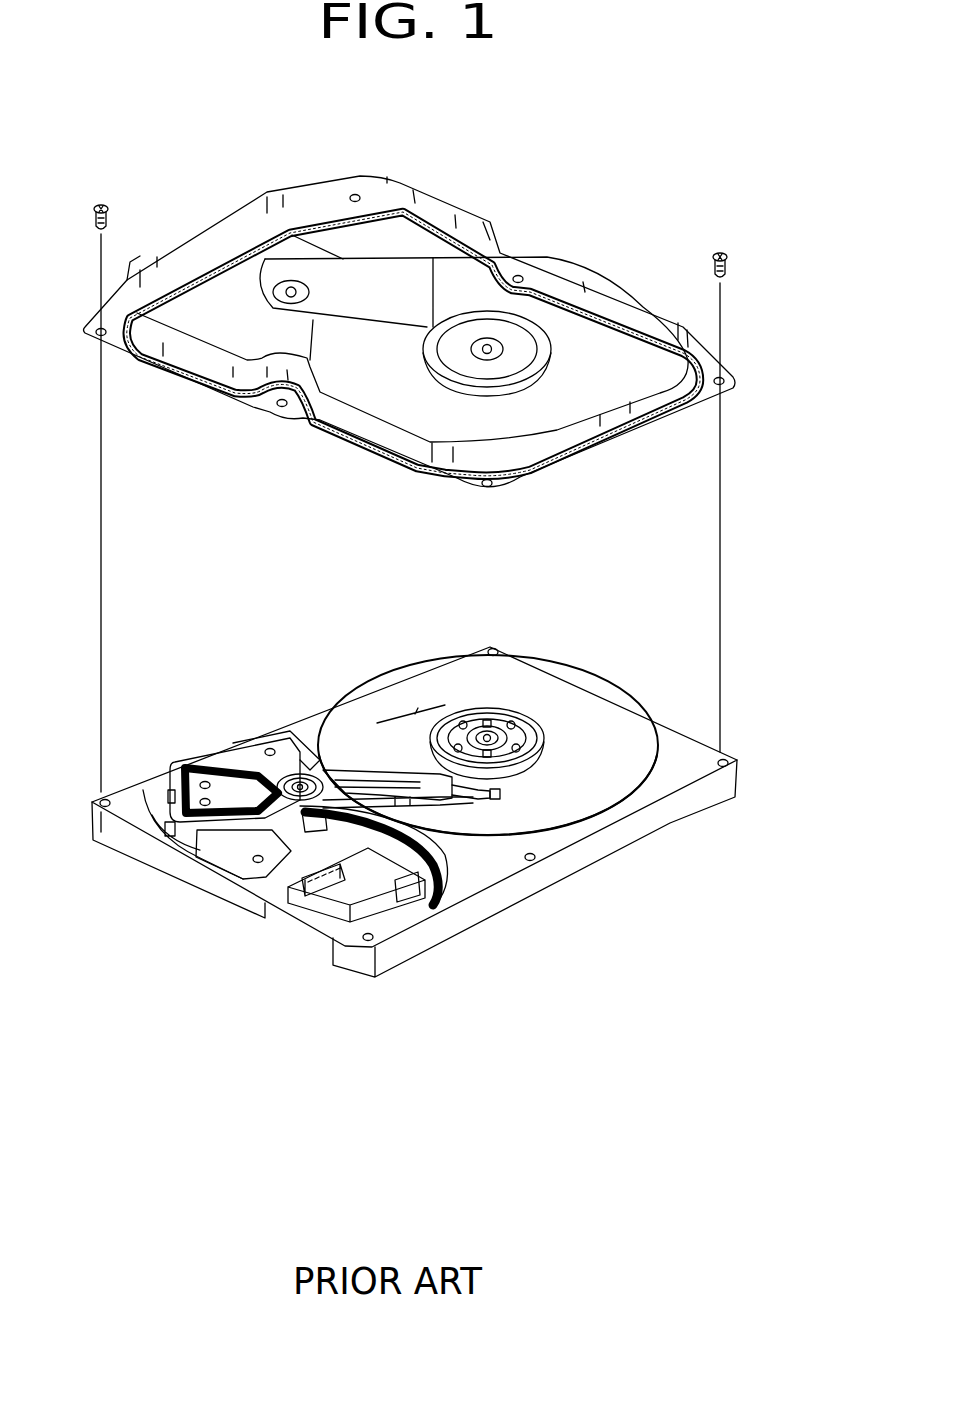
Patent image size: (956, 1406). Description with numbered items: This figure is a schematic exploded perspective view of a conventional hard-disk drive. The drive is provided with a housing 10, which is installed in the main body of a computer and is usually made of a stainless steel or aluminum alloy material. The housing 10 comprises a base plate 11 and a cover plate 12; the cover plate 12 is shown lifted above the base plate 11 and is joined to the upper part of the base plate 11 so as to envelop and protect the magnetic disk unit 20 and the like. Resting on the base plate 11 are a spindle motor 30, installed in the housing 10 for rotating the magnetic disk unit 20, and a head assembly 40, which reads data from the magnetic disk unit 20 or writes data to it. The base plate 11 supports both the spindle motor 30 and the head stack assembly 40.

The housing 10 is at (802, 488).
The base plate 11 is at (687, 753).
The cover plate 12 is at (617, 417).
The magnetic disk unit 20 is at (607, 730).
The spindle motor 30 is at (518, 716).
The head assembly 40 is at (333, 774).